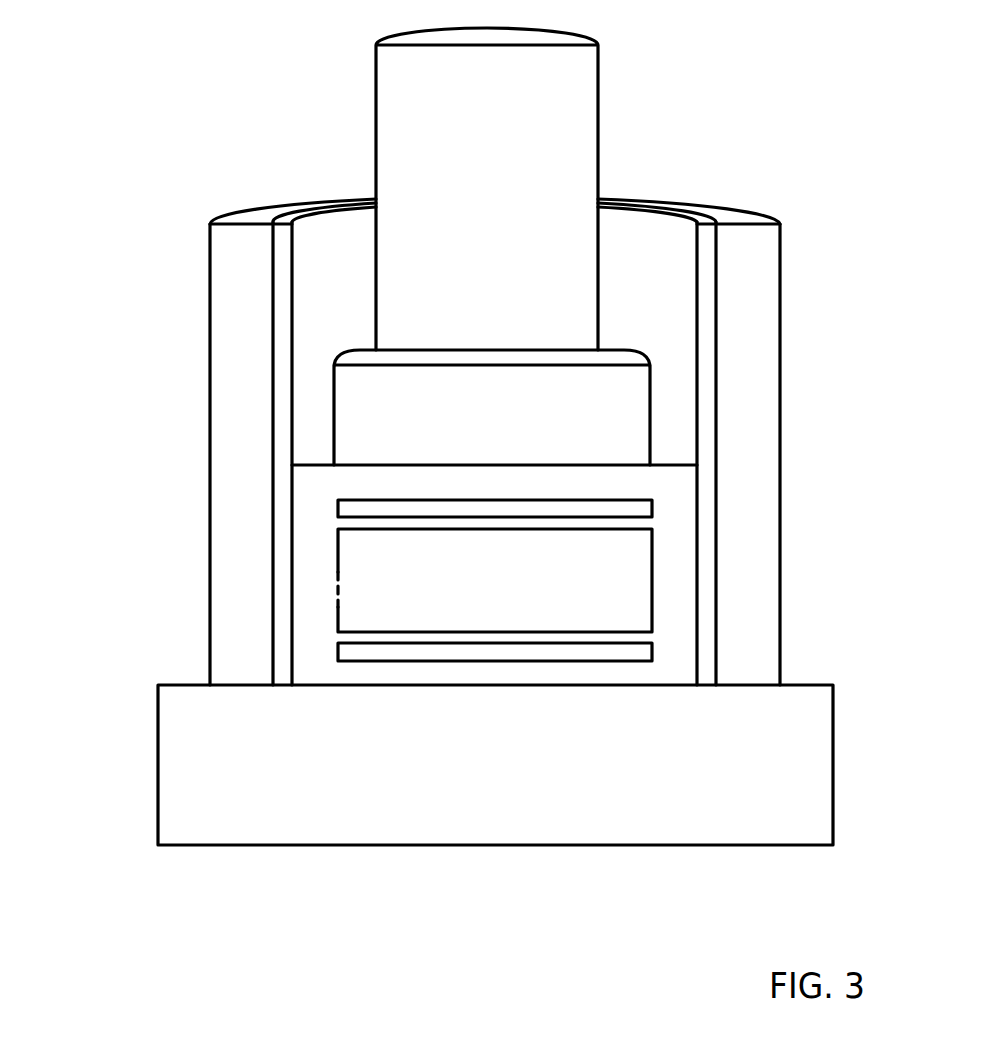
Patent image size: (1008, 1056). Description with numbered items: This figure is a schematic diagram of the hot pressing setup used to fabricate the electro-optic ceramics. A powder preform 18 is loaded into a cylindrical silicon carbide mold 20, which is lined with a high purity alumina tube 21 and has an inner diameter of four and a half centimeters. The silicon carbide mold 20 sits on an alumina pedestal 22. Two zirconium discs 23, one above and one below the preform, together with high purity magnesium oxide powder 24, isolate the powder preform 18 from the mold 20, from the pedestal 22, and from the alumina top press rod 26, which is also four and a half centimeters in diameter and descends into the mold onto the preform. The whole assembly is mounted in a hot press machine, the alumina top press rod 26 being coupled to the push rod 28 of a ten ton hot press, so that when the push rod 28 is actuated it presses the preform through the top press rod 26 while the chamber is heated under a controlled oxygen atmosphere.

The powder preform 18 is at (625, 577).
The cylindrical silicon carbide mold 20 is at (742, 438).
The high purity alumina tube 21 is at (707, 349).
The alumina pedestal 22 is at (170, 765).
The zirconium discs 23 is at (337, 511).
The high purity magnesium oxide powder 24 is at (676, 652).
The alumina top press rod 26 is at (343, 401).
The push rod 28 is at (545, 100).